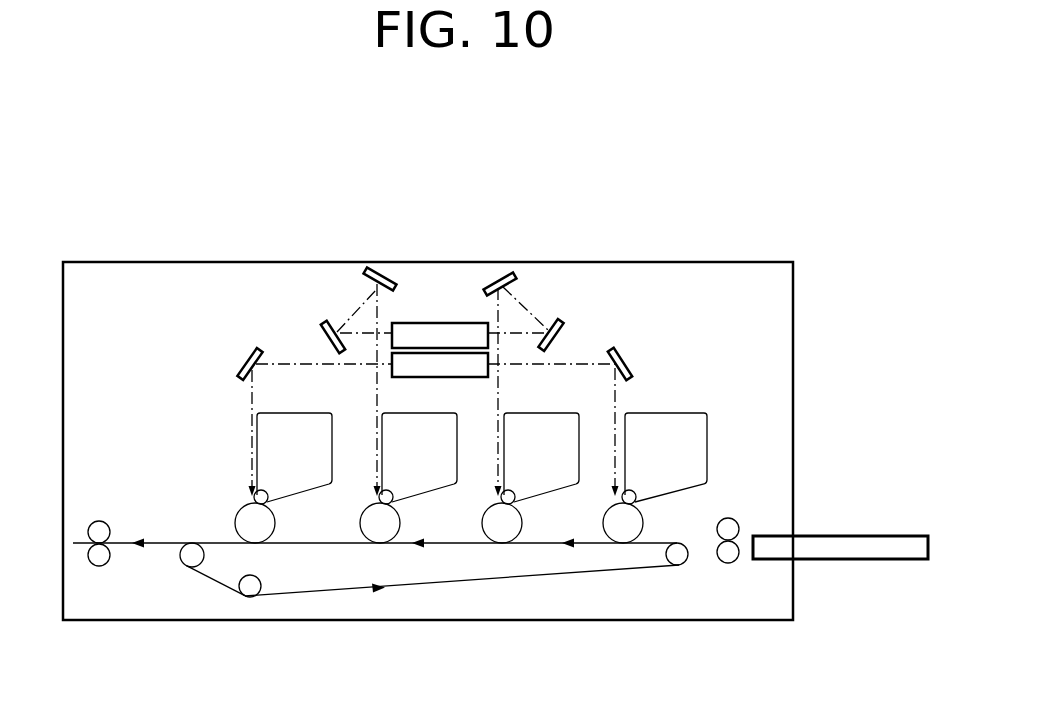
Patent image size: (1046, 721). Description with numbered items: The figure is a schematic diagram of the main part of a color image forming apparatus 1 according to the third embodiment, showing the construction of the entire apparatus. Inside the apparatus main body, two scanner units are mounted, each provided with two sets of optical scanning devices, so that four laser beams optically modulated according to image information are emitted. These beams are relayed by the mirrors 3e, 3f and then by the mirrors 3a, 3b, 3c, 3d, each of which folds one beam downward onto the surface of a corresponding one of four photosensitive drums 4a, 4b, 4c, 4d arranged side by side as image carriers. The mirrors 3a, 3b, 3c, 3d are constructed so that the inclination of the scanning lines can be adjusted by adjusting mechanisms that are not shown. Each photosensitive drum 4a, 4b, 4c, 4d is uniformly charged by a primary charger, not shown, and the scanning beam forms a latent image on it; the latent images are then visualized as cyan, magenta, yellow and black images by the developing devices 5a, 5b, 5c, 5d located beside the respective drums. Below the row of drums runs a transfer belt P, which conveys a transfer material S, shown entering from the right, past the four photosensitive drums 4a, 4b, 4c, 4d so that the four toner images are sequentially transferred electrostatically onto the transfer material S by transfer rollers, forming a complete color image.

The color image forming apparatus 1 is at (167, 287).
The mirror 3a is at (610, 348).
The mirror 3b is at (558, 318).
The mirror 3c is at (505, 273).
The mirror 3d is at (258, 348).
The mirror 3e is at (377, 270).
The mirror 3f is at (322, 327).
The photosensitive drum 4a is at (622, 530).
The photosensitive drum 4b is at (505, 530).
The photosensitive drum 4c is at (382, 530).
The photosensitive drum 4d is at (263, 533).
The developing device 5a is at (645, 497).
The developing device 5b is at (525, 497).
The developing device 5c is at (400, 495).
The developing device 5d is at (277, 493).
The transfer belt P is at (669, 566).
The transfer material S is at (835, 536).